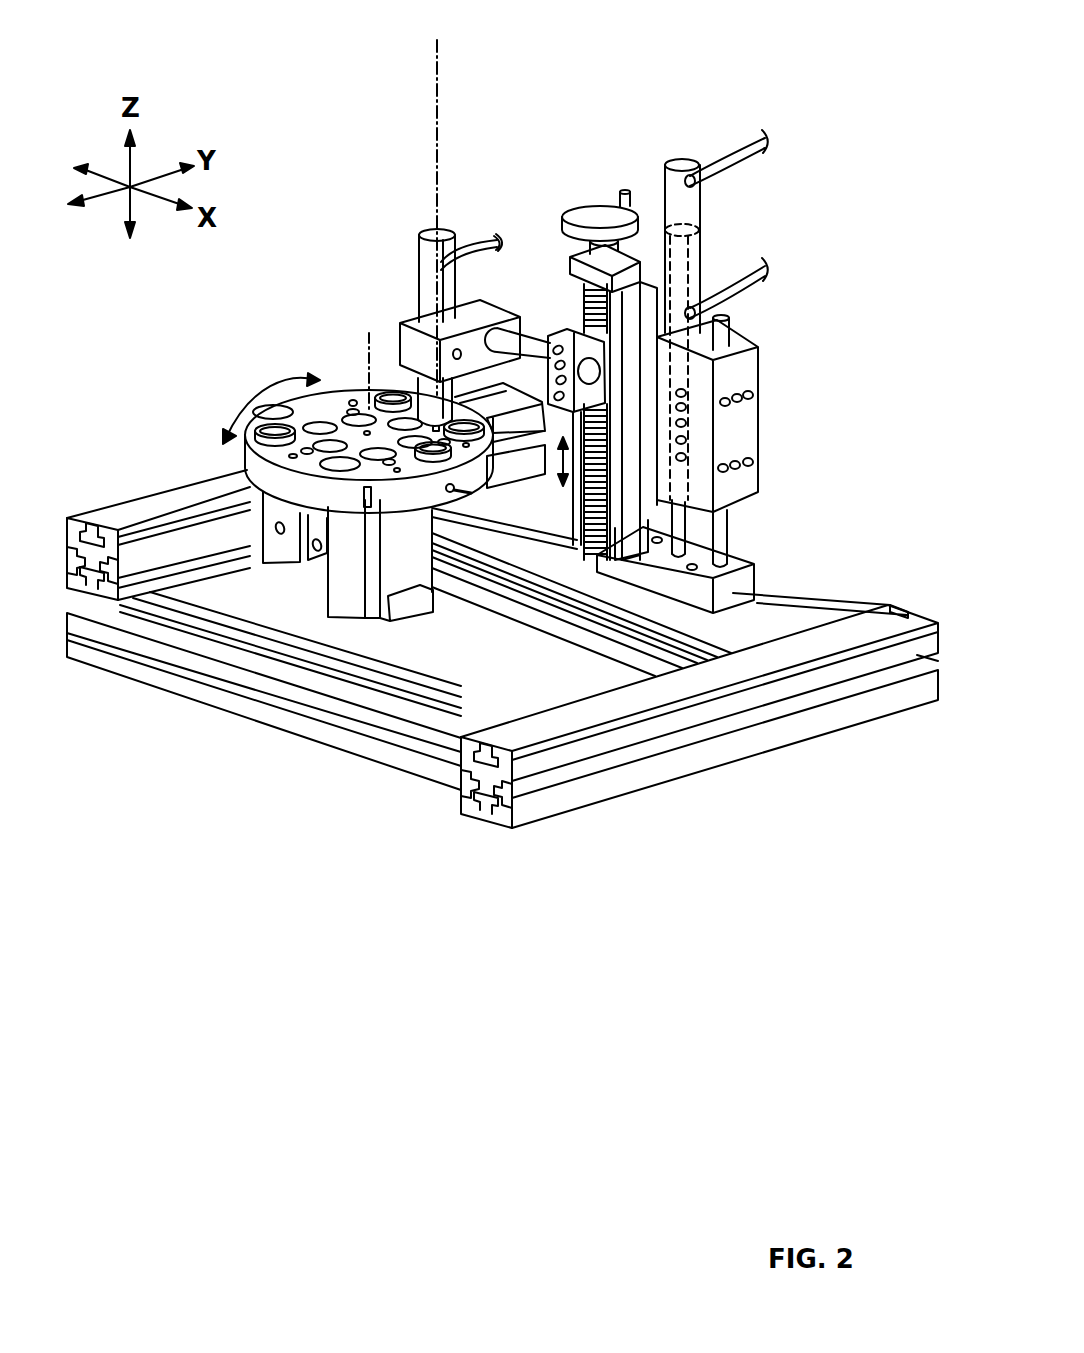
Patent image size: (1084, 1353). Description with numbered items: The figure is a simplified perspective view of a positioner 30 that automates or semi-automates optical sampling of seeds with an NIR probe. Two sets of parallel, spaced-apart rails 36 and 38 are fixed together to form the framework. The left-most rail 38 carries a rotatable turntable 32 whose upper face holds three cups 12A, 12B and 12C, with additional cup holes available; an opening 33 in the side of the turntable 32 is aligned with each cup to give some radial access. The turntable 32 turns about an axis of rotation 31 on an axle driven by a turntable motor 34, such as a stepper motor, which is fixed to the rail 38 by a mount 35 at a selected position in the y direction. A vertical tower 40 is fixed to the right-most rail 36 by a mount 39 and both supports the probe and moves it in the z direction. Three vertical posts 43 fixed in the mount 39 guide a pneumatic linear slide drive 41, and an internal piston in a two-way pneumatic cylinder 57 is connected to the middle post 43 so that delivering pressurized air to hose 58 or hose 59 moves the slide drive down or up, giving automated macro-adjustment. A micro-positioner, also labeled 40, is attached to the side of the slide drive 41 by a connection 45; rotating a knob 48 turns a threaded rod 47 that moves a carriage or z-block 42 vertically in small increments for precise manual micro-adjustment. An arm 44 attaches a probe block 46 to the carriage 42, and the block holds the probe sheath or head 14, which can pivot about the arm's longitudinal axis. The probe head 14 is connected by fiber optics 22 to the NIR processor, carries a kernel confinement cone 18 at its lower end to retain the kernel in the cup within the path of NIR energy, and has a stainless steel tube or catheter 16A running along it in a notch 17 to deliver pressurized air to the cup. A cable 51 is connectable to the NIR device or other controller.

The cup 12A is at (451, 493).
The cup 12B is at (228, 418).
The cup 12C is at (395, 393).
The probe sheath or head 14 is at (419, 264).
The stainless steel tube or catheter 16A is at (487, 238).
The notch 17 is at (452, 233).
The kernel confinement cone 18 is at (397, 410).
The fiber optics 22 is at (441, 286).
The positioner 30 is at (779, 595).
The axis of rotation 31 is at (368, 333).
The rotatable turntable 32 is at (278, 481).
The opening 33 is at (434, 462).
The turntable motor 34 is at (357, 600).
The mount 35 is at (330, 562).
The rail 36 is at (317, 740).
The rail 38 is at (130, 507).
The mount 39 is at (733, 593).
The vertical tower 40 is at (633, 318).
The pneumatic linear slide drive 41 is at (748, 406).
The carriage 42 is at (580, 350).
The vertical posts 43 is at (723, 530).
The arm 44 is at (532, 337).
The connection 45 is at (593, 412).
The probe block 46 is at (470, 315).
The threaded rod 47 is at (607, 440).
The knob 48 is at (593, 213).
The cable 51 is at (370, 513).
The two-way pneumatic cylinder 57 is at (690, 202).
The hose 58 is at (729, 150).
The hose 59 is at (773, 290).